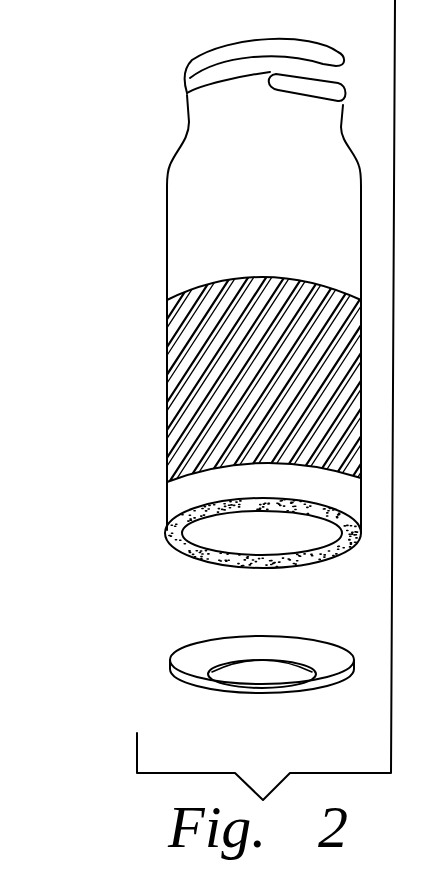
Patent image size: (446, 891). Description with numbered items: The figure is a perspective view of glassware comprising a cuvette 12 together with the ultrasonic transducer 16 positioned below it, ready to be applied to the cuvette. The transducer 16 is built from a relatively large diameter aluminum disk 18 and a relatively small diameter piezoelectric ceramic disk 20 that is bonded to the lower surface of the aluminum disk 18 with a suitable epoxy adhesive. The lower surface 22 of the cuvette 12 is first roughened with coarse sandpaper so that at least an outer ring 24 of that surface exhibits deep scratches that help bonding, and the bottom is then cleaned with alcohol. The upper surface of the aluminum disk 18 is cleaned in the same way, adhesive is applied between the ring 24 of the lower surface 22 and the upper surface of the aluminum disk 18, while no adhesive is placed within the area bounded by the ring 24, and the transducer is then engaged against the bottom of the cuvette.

The cuvette 12 is at (167, 186).
The ultrasonic transducer 16 is at (170, 659).
The aluminum disk 18 is at (203, 642).
The piezoelectric ceramic disk 20 is at (263, 670).
The lower surface 22 is at (177, 552).
The outer ring 24 is at (217, 533).